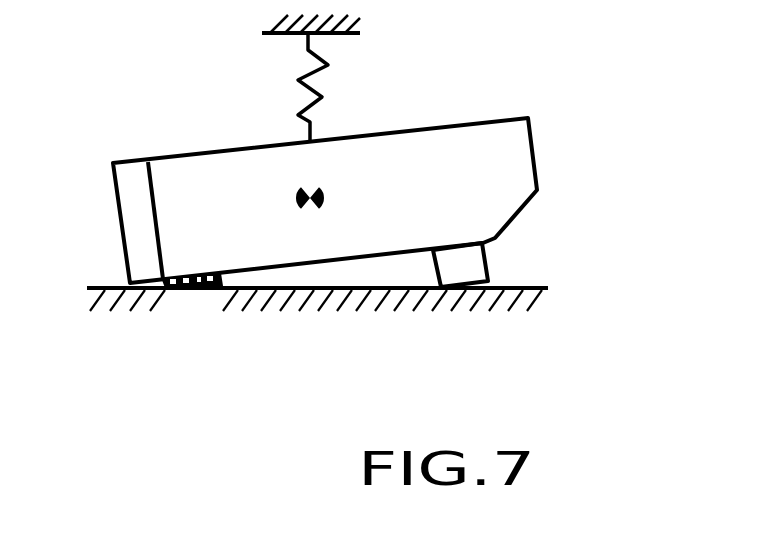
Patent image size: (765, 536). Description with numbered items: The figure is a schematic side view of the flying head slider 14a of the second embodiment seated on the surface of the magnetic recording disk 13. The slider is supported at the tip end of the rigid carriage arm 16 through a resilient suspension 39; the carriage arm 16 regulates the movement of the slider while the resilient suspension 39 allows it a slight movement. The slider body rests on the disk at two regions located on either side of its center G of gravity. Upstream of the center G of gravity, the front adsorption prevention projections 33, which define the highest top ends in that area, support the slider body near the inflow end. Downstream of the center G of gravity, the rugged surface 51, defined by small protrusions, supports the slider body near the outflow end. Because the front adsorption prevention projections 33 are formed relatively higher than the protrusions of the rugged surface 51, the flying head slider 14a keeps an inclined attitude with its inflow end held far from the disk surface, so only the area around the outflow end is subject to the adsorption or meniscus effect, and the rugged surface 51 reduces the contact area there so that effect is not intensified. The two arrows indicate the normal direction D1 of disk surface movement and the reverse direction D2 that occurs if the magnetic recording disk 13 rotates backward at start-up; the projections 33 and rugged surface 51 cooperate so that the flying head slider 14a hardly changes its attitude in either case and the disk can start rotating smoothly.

The carriage arm 16 is at (292, 36).
The resilient suspension 39 is at (325, 72).
The flying head slider 14a is at (467, 118).
The center of gravity G is at (323, 193).
The front adsorption prevention projections 33 is at (432, 270).
The rugged surface 51 is at (187, 306).
The magnetic recording disk 13 is at (523, 287).
The normal direction D1 is at (290, 343).
The reverse direction D2 is at (348, 388).